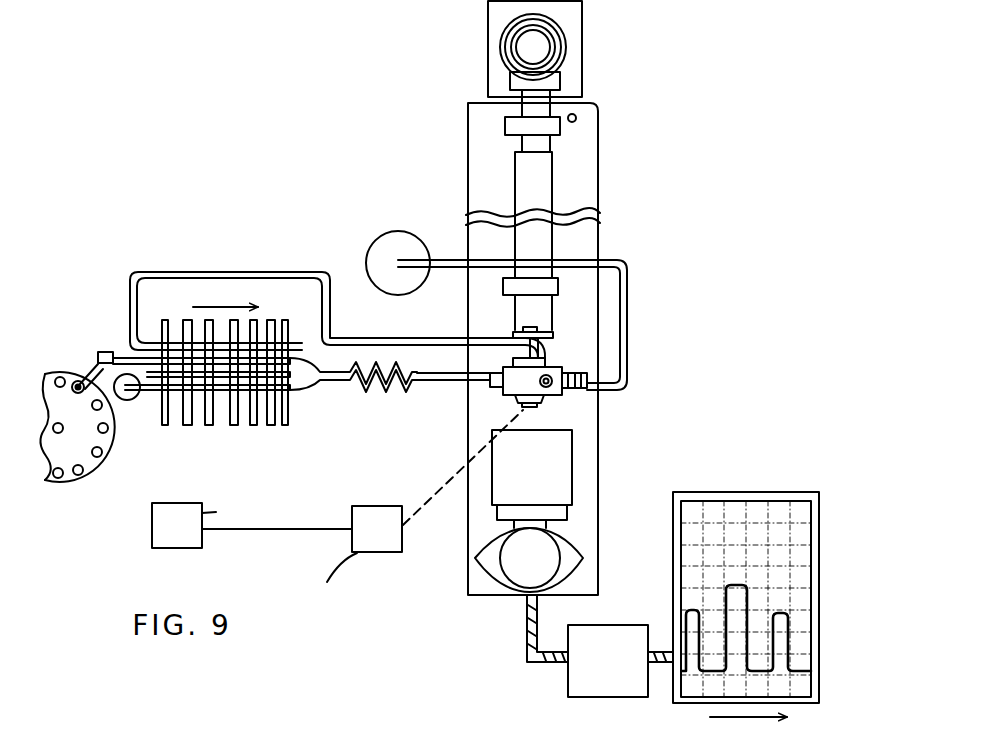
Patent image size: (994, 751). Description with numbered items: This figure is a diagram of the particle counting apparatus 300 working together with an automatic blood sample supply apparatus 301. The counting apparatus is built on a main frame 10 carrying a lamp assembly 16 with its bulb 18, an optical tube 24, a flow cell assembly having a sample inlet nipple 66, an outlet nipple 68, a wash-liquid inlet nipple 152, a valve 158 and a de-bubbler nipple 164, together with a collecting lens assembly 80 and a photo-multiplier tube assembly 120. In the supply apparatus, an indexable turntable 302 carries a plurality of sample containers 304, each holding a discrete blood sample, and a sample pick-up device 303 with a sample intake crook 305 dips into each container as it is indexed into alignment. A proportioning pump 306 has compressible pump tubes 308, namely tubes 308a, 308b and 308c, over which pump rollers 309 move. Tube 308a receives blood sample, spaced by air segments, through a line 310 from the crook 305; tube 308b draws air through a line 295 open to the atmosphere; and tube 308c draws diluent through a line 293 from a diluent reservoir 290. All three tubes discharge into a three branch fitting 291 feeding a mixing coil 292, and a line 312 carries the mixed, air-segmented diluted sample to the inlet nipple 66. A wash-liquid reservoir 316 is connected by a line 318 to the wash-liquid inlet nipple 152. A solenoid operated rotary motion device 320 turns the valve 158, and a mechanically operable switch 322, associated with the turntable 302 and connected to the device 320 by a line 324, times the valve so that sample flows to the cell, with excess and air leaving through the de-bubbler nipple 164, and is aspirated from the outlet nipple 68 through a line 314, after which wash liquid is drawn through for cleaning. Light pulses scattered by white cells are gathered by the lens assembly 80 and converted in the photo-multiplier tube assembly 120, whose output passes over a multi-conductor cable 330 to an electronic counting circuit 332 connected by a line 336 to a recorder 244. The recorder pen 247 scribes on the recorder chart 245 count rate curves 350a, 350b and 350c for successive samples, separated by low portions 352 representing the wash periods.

The main frame 10 is at (600, 116).
The lamp assembly 16 is at (585, 70).
The bulb 18 is at (544, 43).
The optical tube 24 is at (552, 178).
The sample inlet nipple 66 is at (503, 372).
The outlet nipple 68 is at (528, 350).
The collecting lens assembly 80 is at (573, 446).
The photo-multiplier tube assembly 120 is at (581, 546).
The wash-liquid inlet nipple 152 is at (569, 373).
The flow cell assembly valve 158 is at (536, 328).
The de-bubbler nipple 164 is at (548, 387).
The recorder 244 is at (697, 492).
The recorder chart 245 is at (762, 507).
The recorder pen 247 is at (683, 680).
The diluent reservoir 290 is at (121, 400).
The three branch fitting 291 is at (318, 388).
The mixing coil 292 is at (374, 391).
The diluent line 293 is at (139, 400).
The air line 295 is at (151, 379).
The particle counting apparatus 300 is at (620, 231).
The automatic blood sample supply apparatus 301 is at (97, 290).
The indexable turntable 302 is at (82, 487).
The sample pick-up device 303 is at (100, 356).
The sample containers 304 is at (82, 479).
The sample intake crook 305 is at (80, 381).
The proportioning pump 306 is at (160, 317).
The pump tubes 308 is at (293, 338).
The sample pump tube 308a is at (177, 360).
The air pump tube 308b is at (201, 430).
The diluent pump tube 308c is at (225, 392).
The pump rollers 309 is at (274, 320).
The sample line 310 is at (108, 351).
The sample supply line 312 is at (455, 383).
The aspiration line 314 is at (460, 339).
The wash-liquid reservoir 316 is at (397, 240).
The wash-liquid line 318 is at (628, 310).
The solenoid operated rotary motion device 320 is at (367, 553).
The mechanically operable switch 322 is at (190, 503).
The electrical line 324 is at (315, 531).
The multi-conductor cable 330 is at (527, 608).
The electronic counting circuit 332 is at (615, 630).
The recorder line 336 is at (662, 650).
The first count rate curve 350a is at (783, 612).
The second count rate curve 350b is at (740, 584).
The pulse 350c is at (687, 600).
The low portion between curves 352 is at (768, 672).